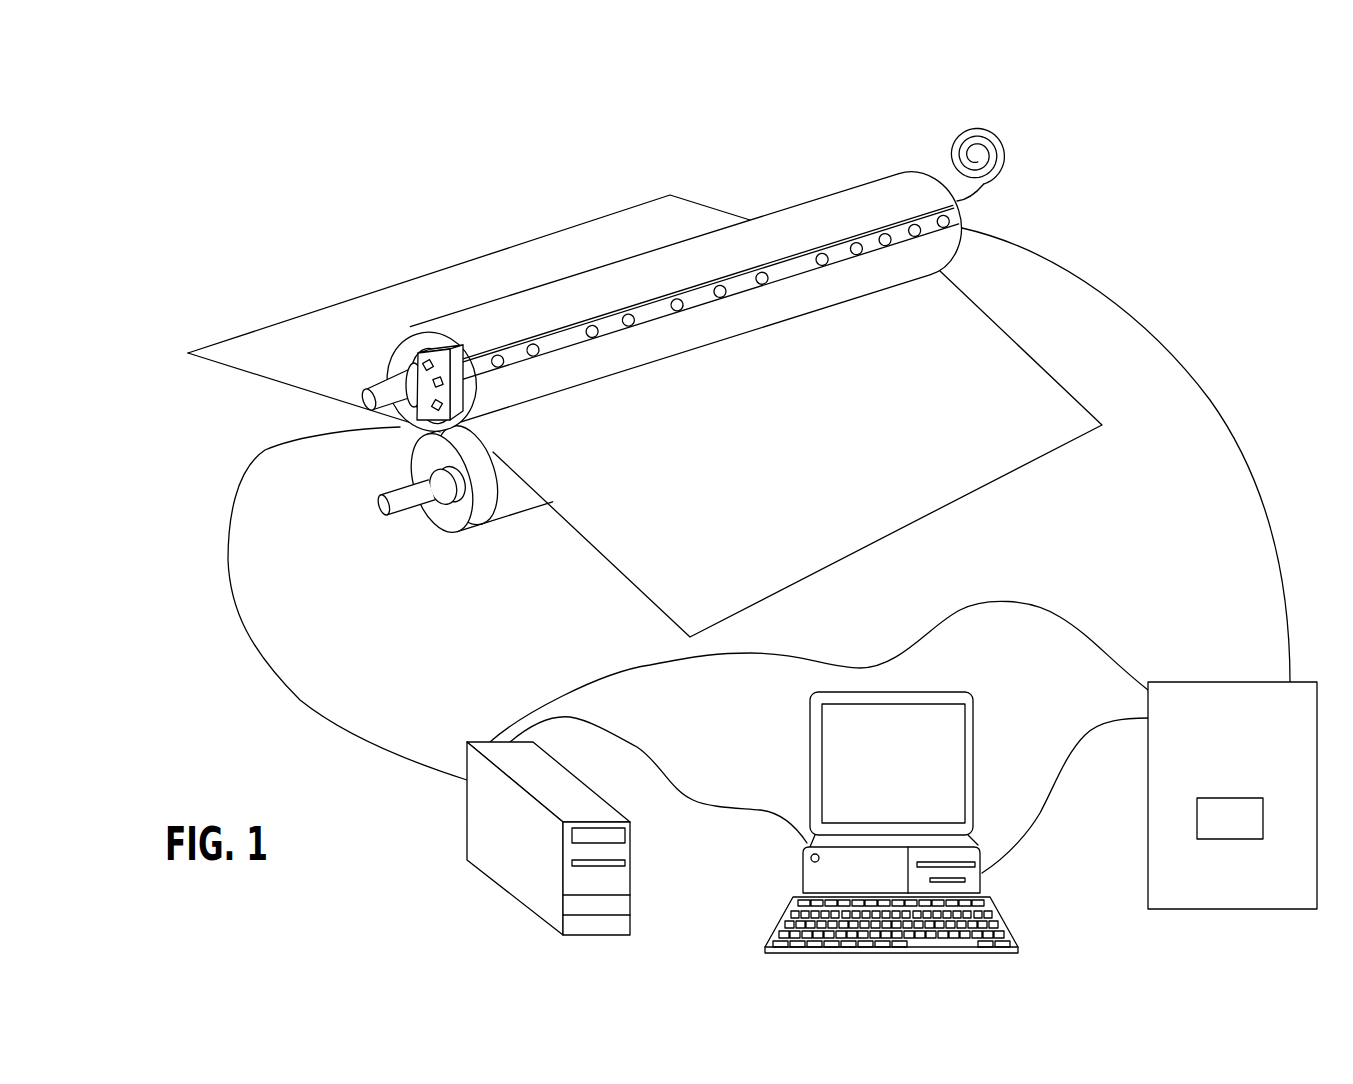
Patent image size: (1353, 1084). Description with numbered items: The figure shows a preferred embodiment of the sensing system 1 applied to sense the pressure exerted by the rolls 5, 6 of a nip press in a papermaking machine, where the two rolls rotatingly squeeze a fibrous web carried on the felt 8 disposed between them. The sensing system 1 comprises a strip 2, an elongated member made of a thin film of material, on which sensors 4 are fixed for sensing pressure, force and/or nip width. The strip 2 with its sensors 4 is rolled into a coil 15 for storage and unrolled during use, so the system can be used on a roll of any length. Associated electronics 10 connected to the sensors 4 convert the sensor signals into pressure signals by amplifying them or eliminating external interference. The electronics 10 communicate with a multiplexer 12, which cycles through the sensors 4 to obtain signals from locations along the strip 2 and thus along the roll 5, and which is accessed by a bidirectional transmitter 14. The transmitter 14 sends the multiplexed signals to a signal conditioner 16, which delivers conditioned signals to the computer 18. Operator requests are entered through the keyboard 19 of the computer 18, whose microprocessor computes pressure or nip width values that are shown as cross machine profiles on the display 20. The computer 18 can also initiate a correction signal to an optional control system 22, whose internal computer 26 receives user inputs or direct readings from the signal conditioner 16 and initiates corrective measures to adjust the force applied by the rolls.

The sensing system 1 is at (707, 275).
The strip 2 is at (781, 253).
The sensors 4 is at (632, 317).
The roll 5 is at (876, 178).
The roll 6 is at (520, 517).
The felt 8 is at (868, 532).
The associated electronics 10 is at (413, 427).
The multiplexer 12 is at (462, 358).
The bidirectional transmitter 14 is at (408, 350).
The coil 15 is at (1008, 195).
The signal conditioner 16 is at (467, 832).
The computer 18 is at (802, 877).
The keyboard 19 is at (1005, 925).
The display 20 is at (903, 692).
The control system 22 is at (1232, 776).
The internal computer 26 is at (1265, 817).